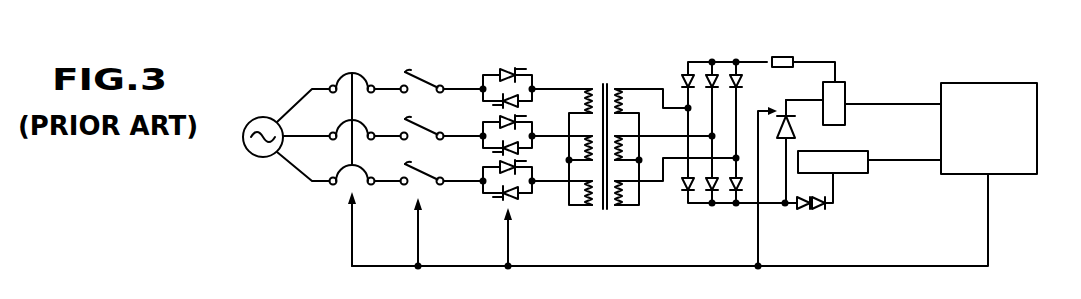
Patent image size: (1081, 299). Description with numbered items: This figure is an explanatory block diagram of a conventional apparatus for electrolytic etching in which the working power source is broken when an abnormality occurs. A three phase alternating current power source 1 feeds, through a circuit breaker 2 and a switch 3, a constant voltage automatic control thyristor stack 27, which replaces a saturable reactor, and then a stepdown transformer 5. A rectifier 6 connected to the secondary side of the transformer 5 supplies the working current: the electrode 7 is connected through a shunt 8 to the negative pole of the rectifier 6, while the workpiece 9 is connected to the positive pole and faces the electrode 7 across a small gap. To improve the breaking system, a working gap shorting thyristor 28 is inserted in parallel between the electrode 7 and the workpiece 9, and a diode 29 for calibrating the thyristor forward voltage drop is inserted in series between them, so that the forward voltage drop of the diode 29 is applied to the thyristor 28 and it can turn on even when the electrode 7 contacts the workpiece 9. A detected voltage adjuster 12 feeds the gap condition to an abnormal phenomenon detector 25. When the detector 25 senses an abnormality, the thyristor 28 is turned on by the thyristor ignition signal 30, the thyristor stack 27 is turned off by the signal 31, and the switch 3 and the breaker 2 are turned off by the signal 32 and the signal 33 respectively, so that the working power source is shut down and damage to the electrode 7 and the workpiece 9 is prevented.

The three phase alternating current power source 1 is at (263, 117).
The circuit breaker 2 is at (352, 73).
The switch 3 is at (428, 73).
The thyristor stack 27 is at (501, 70).
The stepdown transformer 5 is at (605, 84).
The rectifier 6 is at (714, 61).
The shunt 8 is at (778, 57).
The electrode 7 is at (847, 95).
The working gap shorting thyristor 28 is at (783, 112).
The thyristor ignition signal 30 is at (758, 240).
The workpiece 9 is at (850, 175).
The diode 29 is at (811, 211).
The abnormal phenomenon detector 25 is at (970, 82).
The detected voltage adjuster 12 is at (989, 229).
The signal for turning off the thyristor stack 31 is at (517, 229).
The signal 32 is at (427, 229).
The signal 33 is at (361, 229).